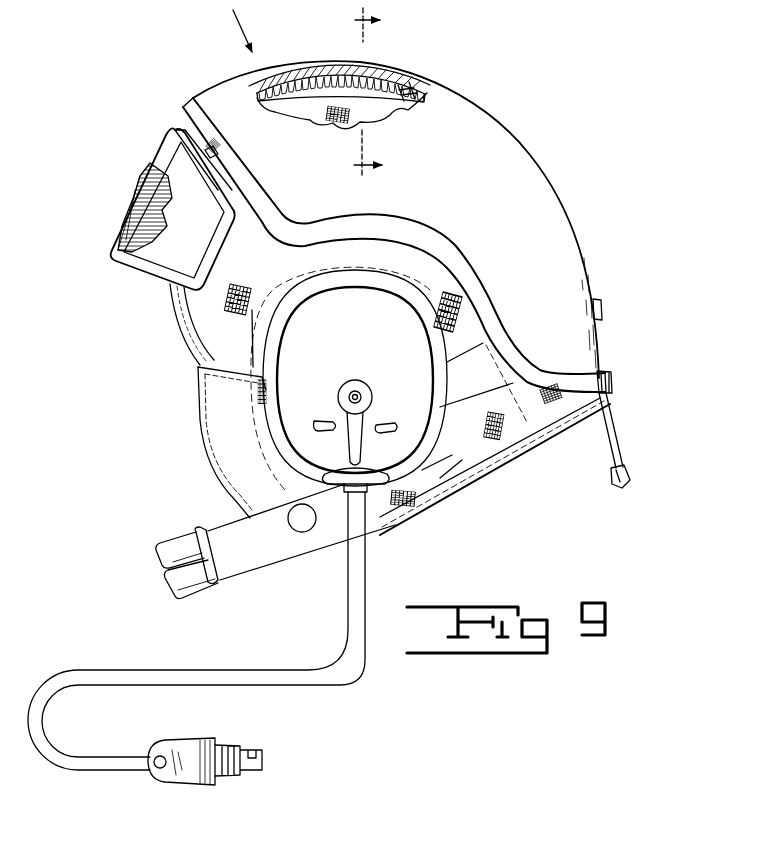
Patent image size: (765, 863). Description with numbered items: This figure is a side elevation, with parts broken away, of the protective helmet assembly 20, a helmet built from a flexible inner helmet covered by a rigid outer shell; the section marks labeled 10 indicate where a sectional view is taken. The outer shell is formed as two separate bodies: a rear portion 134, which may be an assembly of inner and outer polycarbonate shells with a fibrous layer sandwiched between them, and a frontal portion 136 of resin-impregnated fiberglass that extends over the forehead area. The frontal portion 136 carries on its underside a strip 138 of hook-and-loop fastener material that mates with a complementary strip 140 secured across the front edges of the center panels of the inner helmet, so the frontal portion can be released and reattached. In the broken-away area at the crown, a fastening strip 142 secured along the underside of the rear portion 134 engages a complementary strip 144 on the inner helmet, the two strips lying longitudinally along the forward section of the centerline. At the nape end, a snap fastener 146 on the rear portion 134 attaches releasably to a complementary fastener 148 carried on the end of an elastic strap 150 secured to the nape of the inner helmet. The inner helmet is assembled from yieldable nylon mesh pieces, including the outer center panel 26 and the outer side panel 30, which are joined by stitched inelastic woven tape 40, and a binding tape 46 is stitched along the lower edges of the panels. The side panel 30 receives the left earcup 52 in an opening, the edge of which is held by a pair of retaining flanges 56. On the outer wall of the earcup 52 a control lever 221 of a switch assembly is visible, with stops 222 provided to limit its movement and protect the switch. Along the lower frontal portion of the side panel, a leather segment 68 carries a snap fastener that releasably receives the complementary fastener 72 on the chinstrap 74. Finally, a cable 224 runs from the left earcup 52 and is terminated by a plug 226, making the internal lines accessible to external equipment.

The protective helmet assembly 20 is at (580, 157).
The section line 10 is at (386, 93).
The rear portion 134 is at (497, 124).
The fastening strip 142 is at (306, 70).
The complementary strip 144 is at (182, 128).
The inelastic woven tape 40 is at (232, 187).
The outer center panel 26 is at (205, 153).
The frontal portion 136 is at (165, 142).
The strip of hook-and-loop fastener material 138 is at (127, 207).
The complementary strip 140 is at (160, 212).
The outer side panel 30 is at (232, 320).
The binding tape 46 is at (180, 302).
The segment 68 is at (218, 422).
The left earcup 52 is at (322, 352).
The retaining flanges 56 is at (366, 278).
The stops 222 is at (315, 422).
The control lever 221 is at (366, 452).
The chinstrap 74 is at (252, 550).
The complementary fastener 72 is at (312, 522).
The cable 224 is at (370, 662).
The plug 226 is at (204, 738).
The snap fastener 146 is at (601, 317).
The elastic strap 150 is at (615, 443).
The complementary fastener 148 is at (640, 480).